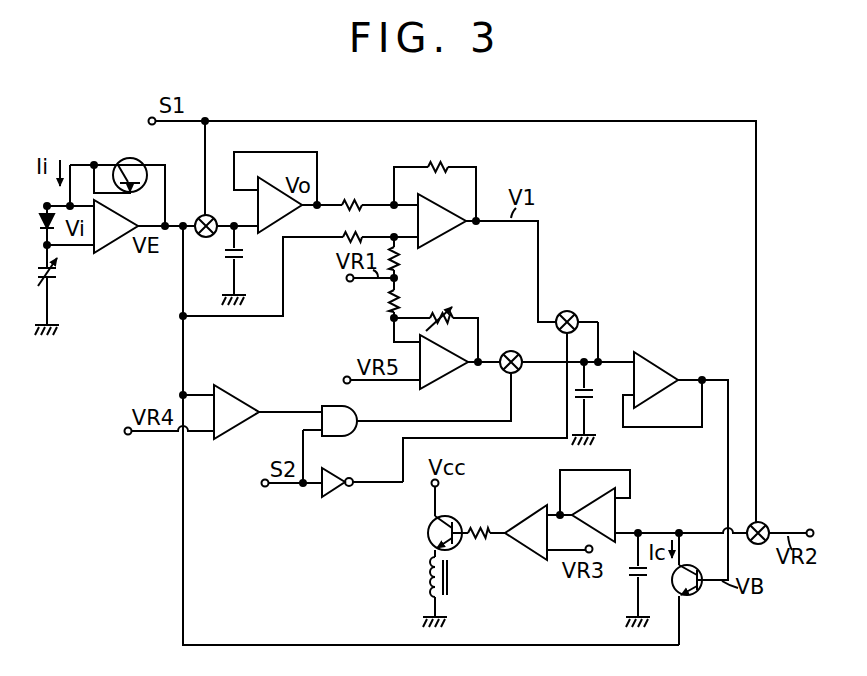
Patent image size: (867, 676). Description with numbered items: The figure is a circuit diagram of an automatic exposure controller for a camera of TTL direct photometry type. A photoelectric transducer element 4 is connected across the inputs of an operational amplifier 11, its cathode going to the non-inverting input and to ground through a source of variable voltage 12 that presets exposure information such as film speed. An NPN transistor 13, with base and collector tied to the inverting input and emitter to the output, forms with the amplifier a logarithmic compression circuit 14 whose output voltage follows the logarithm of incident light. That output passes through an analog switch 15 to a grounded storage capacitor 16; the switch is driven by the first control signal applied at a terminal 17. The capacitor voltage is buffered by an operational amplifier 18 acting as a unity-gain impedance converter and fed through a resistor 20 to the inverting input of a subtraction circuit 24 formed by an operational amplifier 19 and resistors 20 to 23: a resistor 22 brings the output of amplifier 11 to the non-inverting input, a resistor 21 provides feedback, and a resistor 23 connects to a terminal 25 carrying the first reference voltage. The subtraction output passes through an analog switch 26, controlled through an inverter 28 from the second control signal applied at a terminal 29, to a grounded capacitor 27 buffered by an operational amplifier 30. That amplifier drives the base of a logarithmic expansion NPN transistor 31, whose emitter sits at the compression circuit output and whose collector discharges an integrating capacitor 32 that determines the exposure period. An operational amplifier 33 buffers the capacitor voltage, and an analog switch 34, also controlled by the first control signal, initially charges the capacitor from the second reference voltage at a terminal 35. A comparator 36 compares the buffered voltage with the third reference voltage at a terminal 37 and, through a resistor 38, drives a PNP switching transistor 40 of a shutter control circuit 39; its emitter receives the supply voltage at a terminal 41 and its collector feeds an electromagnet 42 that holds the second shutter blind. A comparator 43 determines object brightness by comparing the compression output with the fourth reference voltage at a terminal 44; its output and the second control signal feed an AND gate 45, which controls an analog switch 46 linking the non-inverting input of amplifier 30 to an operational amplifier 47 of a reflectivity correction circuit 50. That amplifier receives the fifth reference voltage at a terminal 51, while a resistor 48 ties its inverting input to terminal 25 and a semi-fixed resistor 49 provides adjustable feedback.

The photoelectric transducer element 4 is at (40, 222).
The operational amplifier 11 is at (125, 221).
The source of variable voltage 12 is at (58, 279).
The NPN transistor 13 is at (126, 159).
The logarithmic compression circuit 14 is at (172, 170).
The analog switch 15 is at (204, 238).
The storage capacitor 16 is at (245, 254).
The terminal 17 is at (149, 121).
The operational amplifier 18 is at (295, 208).
The operational amplifier 19 is at (451, 226).
The resistor 20 is at (349, 200).
The resistor 21 is at (432, 164).
The resistor 22 is at (365, 234).
The resistor 23 is at (401, 262).
The subtraction circuit 24 is at (492, 187).
The terminal 25 is at (346, 278).
The analog switch 26 is at (579, 316).
The capacitor 27 is at (596, 393).
The inverter 28 is at (336, 487).
The terminal 29 is at (268, 490).
The operational amplifier 30 is at (660, 362).
The NPN transistor 31 is at (699, 592).
The integrating capacitor 32 is at (630, 577).
The operational amplifier 33 is at (623, 510).
The analog switch 34 is at (754, 522).
The terminal 35 is at (809, 528).
The comparator 36 is at (528, 549).
The terminal 37 is at (586, 546).
The resistor 38 is at (484, 527).
The shutter control circuit 39 is at (487, 477).
The PNP switching transistor 40 is at (428, 536).
The terminal 41 is at (432, 486).
The electromagnet 42 is at (452, 584).
The comparator 43 is at (242, 439).
The terminal 44 is at (131, 437).
The AND gate 45 is at (346, 434).
The analog switch 46 is at (522, 357).
The operational amplifier 47 is at (447, 373).
The resistor 48 is at (388, 302).
The semi-fixed resistor 49 is at (457, 314).
The reflectivity correction circuit 50 is at (488, 336).
The terminal 51 is at (343, 380).